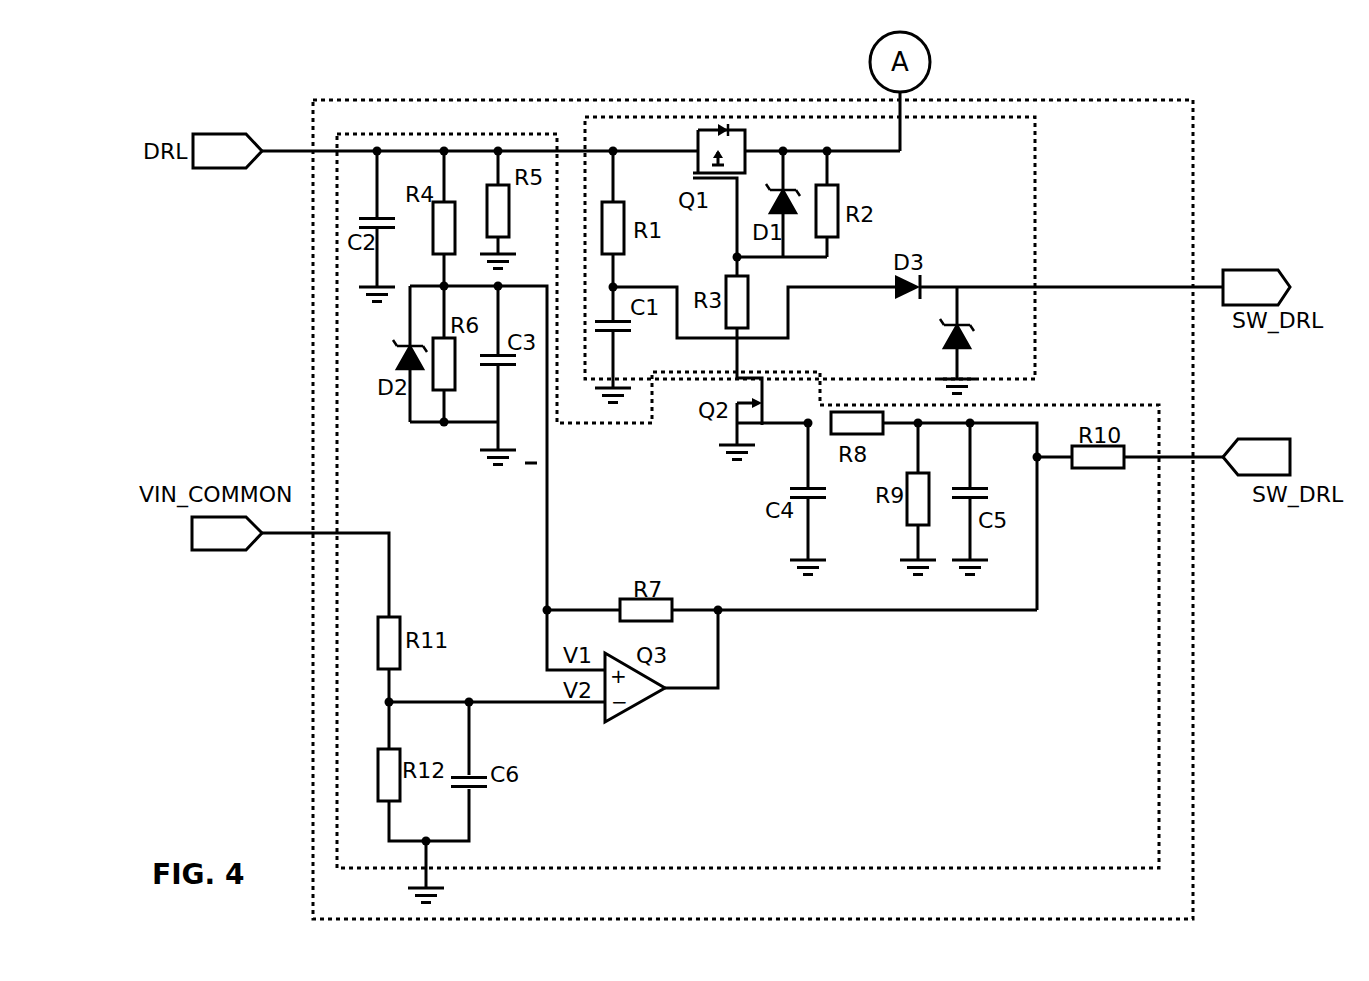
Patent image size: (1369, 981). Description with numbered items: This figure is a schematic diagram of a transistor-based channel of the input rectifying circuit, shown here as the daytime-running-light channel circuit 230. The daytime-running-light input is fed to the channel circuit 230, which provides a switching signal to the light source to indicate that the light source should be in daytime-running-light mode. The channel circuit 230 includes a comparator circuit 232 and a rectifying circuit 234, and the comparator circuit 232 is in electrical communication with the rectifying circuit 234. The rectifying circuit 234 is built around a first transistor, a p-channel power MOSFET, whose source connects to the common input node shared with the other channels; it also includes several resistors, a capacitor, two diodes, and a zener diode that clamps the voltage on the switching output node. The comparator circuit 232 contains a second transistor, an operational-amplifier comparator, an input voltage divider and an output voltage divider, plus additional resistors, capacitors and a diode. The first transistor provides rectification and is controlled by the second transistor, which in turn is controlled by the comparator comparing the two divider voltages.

The DRL channel circuit 230 is at (1040, 100).
The comparator circuit 232 is at (407, 131).
The rectifying circuit 234 is at (665, 116).